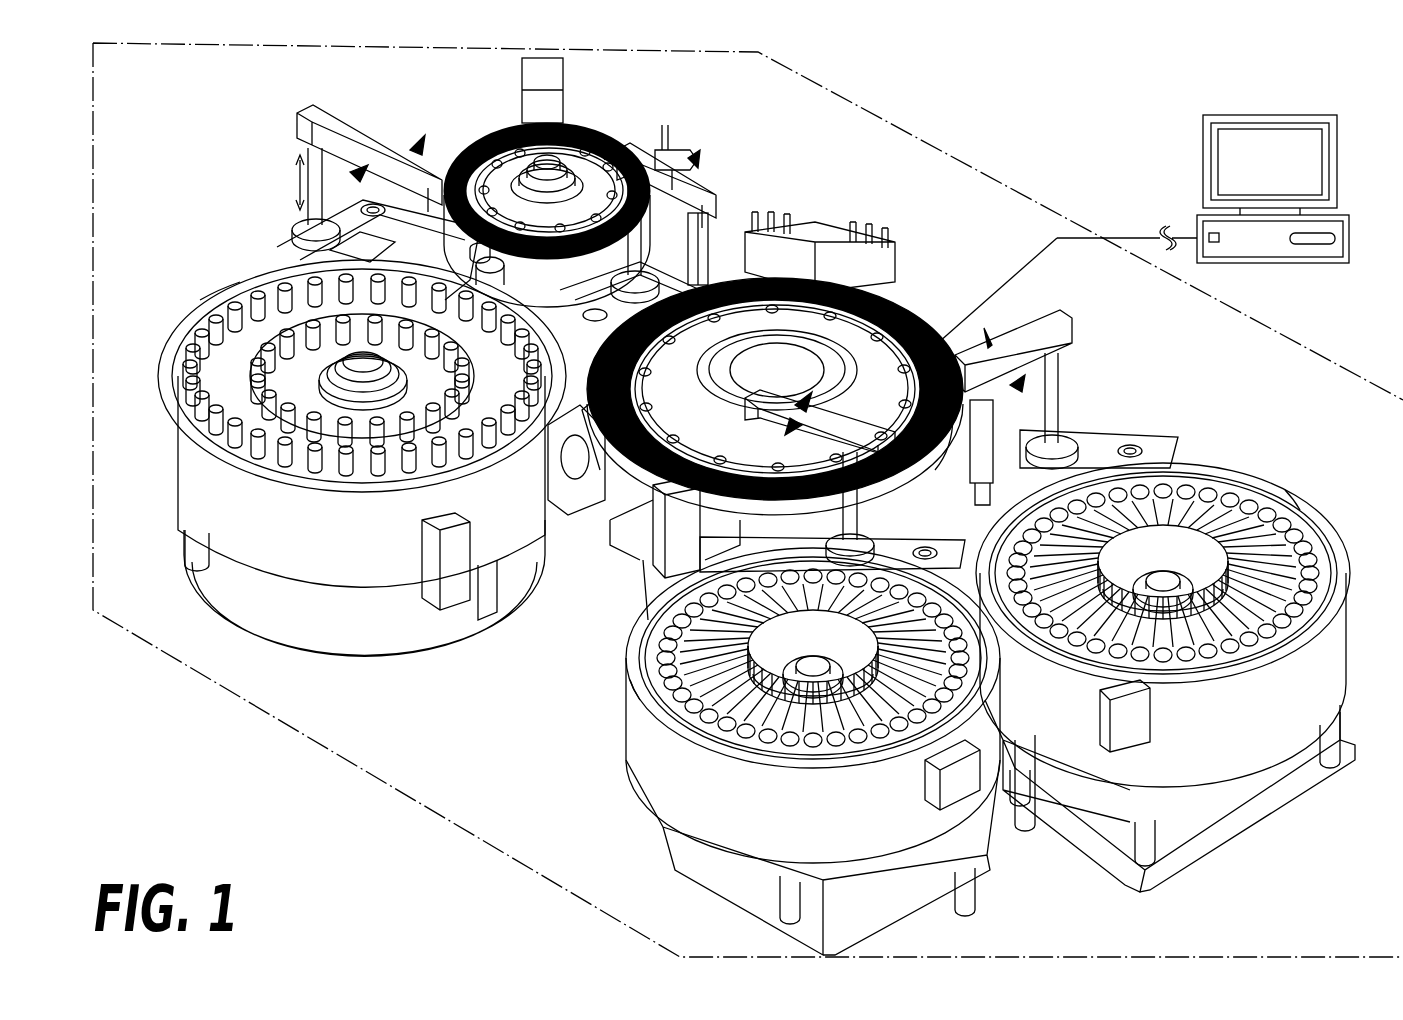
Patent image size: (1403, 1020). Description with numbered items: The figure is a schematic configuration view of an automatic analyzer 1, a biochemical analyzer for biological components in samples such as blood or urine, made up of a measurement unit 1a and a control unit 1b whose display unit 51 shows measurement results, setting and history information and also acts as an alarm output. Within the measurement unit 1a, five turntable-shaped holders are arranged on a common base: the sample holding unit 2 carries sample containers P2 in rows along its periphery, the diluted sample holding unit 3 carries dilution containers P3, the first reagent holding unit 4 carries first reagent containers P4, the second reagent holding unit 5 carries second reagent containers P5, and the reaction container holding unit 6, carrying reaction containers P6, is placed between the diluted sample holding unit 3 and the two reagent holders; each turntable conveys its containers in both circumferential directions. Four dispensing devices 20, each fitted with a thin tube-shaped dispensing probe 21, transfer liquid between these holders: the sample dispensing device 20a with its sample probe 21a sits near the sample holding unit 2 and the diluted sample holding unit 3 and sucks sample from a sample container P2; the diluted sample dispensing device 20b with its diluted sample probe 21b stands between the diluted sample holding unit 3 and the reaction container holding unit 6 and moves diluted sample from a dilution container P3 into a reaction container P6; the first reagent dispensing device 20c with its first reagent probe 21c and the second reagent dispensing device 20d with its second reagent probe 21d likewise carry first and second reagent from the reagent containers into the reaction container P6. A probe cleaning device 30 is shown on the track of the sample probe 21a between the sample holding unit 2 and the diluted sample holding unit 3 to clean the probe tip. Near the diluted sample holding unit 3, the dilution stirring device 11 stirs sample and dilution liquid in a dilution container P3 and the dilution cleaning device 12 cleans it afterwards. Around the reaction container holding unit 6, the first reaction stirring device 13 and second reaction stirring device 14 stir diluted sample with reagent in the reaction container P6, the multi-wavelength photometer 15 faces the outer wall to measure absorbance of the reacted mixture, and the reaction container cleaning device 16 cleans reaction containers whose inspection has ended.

The automatic analyzer 1 is at (1402, 93).
The measurement unit 1a is at (962, 160).
The control unit 1b is at (1224, 166).
The display unit 51 is at (1315, 170).
The sample holding unit 2 is at (190, 462).
The sample container P2 is at (215, 308).
The diluted sample holding unit 3 is at (505, 130).
The dilution container P3 is at (600, 140).
The dilution stirring device 11 is at (557, 72).
The dilution cleaning device 12 is at (676, 135).
The probe cleaning device 30 is at (433, 290).
The dispensing device 20 is at (369, 139).
The sample dispensing device 20a is at (345, 128).
The dispensing probe 21 is at (268, 199).
The sample probe 21a is at (300, 230).
The diluted sample dispensing device 20b is at (706, 185).
The diluted sample probe 21b is at (712, 225).
The reaction container cleaning device 16 is at (800, 232).
The reaction container holding unit 6 is at (635, 483).
The reaction container P6 is at (935, 335).
The first reagent dispensing device 20c is at (840, 390).
The first reagent probe 21c is at (760, 485).
The first reaction stirring device 13 is at (938, 482).
The multi-wavelength photometer 15 is at (653, 540).
The second reagent dispensing device 20d is at (1046, 322).
The second reagent probe 21d is at (1060, 425).
The second reaction stirring device 14 is at (988, 335).
The first reagent holding unit 4 is at (648, 775).
The first reagent container P4 is at (638, 710).
The second reagent holding unit 5 is at (1330, 650).
The second reagent container P5 is at (1272, 485).